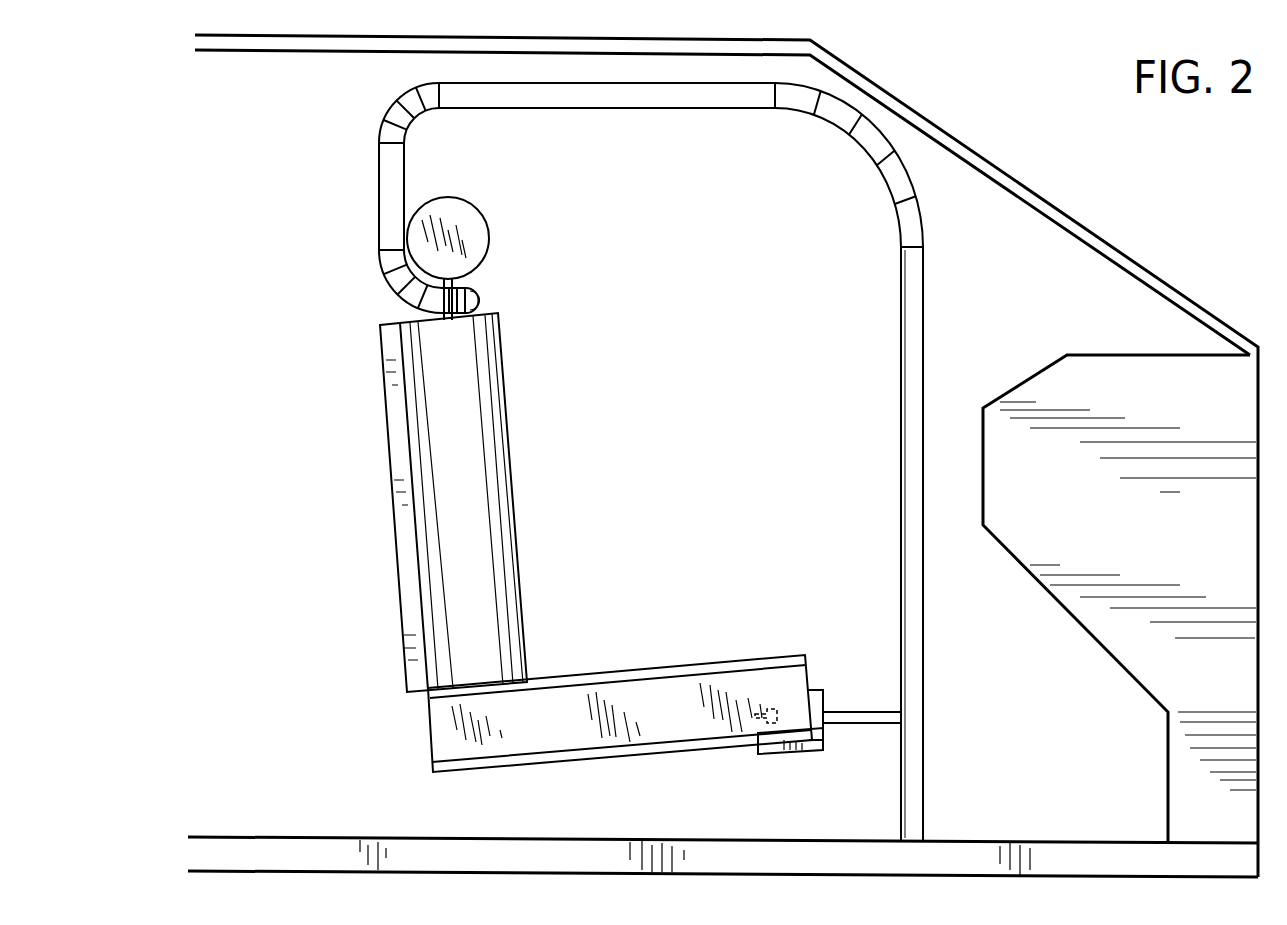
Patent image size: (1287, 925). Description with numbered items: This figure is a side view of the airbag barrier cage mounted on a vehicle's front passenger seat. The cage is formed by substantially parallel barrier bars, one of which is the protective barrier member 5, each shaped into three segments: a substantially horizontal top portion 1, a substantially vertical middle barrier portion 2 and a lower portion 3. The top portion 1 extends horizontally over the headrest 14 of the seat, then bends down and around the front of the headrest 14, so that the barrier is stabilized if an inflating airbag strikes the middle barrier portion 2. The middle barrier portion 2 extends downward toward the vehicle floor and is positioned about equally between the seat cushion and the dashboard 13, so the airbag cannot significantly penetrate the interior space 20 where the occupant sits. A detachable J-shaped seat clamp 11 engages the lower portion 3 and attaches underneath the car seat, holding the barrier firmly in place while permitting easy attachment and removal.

The top portion 1 is at (570, 109).
The middle barrier portion 2 is at (925, 297).
The lower portion 3 is at (923, 760).
The protective barrier member 5 is at (745, 109).
The seat clamp 11 is at (778, 753).
The dashboard 13 is at (1021, 384).
The headrest 14 is at (490, 232).
The interior space 20 is at (690, 397).